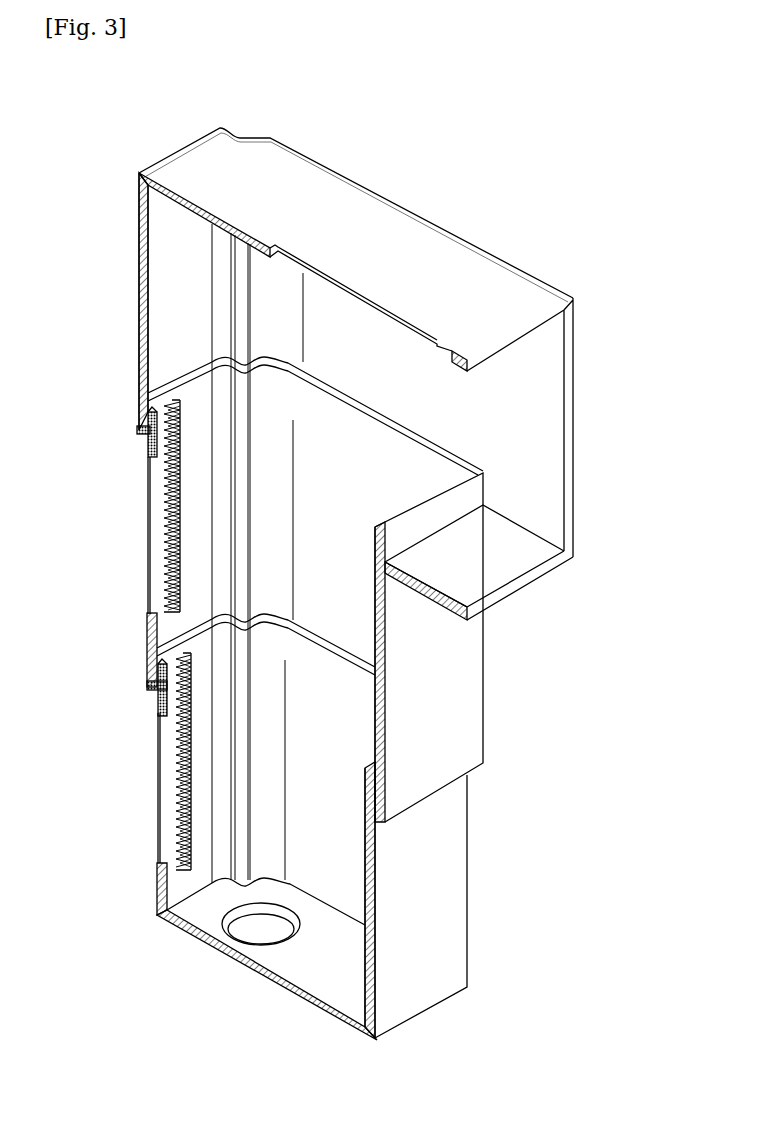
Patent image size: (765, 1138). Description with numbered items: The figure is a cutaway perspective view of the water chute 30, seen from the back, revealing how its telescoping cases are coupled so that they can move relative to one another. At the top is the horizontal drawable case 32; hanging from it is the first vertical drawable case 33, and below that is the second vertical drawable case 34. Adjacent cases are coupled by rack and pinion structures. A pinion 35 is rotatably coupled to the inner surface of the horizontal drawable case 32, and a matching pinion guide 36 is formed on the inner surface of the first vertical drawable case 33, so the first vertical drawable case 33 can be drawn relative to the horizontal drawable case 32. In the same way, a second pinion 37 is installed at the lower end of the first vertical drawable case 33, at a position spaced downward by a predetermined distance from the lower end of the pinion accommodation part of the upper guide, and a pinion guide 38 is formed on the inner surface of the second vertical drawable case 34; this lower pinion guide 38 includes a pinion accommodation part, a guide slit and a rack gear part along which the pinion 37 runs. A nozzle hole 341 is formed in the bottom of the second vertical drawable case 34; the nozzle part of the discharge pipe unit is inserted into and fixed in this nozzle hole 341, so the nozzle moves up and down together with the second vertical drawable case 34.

The water chute 30 is at (352, 570).
The horizontal drawable case 32 is at (575, 407).
The first vertical drawable case 33 is at (470, 688).
The second vertical drawable case 34 is at (450, 895).
The nozzle hole 341 is at (278, 945).
The pinion 35 is at (148, 442).
The pinion guide 36 is at (157, 527).
The pinion 37 is at (160, 700).
The pinion guide 38 is at (168, 773).